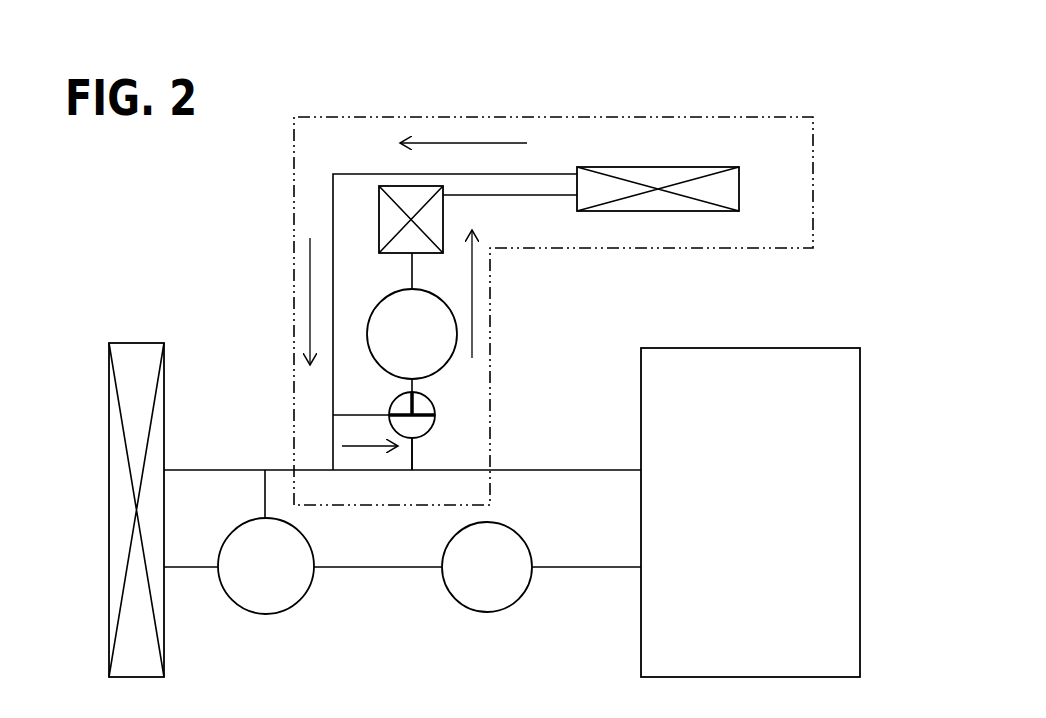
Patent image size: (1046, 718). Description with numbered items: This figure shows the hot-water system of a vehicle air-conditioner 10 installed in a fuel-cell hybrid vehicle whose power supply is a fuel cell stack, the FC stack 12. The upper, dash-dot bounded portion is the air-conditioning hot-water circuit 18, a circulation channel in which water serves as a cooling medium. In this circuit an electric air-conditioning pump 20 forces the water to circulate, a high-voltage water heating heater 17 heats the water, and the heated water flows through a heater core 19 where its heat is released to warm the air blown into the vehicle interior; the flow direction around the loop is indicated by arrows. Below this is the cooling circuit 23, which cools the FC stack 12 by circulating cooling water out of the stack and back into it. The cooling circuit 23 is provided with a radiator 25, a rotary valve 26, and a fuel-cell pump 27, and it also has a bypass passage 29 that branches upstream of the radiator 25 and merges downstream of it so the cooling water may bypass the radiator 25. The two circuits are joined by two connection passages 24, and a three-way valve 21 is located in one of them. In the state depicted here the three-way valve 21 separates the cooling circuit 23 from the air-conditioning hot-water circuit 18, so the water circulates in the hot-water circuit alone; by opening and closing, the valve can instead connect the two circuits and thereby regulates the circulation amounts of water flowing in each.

The air-conditioner 10 is at (508, 316).
The fuel cells (FC stack) 12 is at (725, 348).
The high-voltage water heating heater 17 is at (443, 214).
The air-conditioning hot-water circuit 18 is at (610, 249).
The heater core 19 is at (727, 167).
The electric air-conditioning pump 20 is at (450, 360).
The three-way valve 21 is at (434, 424).
The cooling circuit 23 is at (385, 592).
The connection passages 24 is at (412, 462).
The radiator 25 is at (137, 343).
The rotary valve 26 is at (268, 615).
The fuel-cell pump 27 is at (487, 613).
The bypass passage 29 is at (265, 500).